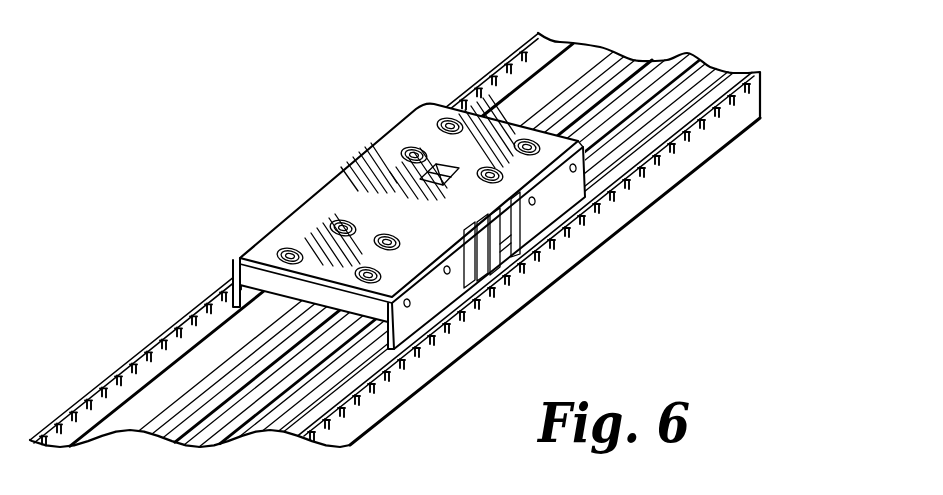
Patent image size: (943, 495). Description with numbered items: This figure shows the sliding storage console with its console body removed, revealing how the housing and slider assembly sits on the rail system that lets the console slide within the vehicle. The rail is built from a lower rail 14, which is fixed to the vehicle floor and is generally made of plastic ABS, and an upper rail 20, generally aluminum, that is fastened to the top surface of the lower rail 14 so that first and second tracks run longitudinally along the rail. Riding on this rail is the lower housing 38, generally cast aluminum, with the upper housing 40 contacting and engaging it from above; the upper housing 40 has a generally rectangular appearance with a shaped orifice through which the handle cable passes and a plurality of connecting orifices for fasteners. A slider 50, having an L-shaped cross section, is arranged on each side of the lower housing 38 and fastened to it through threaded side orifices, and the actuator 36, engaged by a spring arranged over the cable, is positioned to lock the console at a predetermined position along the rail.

The lower rail 14 is at (650, 183).
The upper rail 20 is at (700, 80).
The actuator 36 is at (507, 270).
The lower housing 38 is at (308, 288).
The upper housing 40 is at (408, 133).
The slider 50 is at (442, 310).